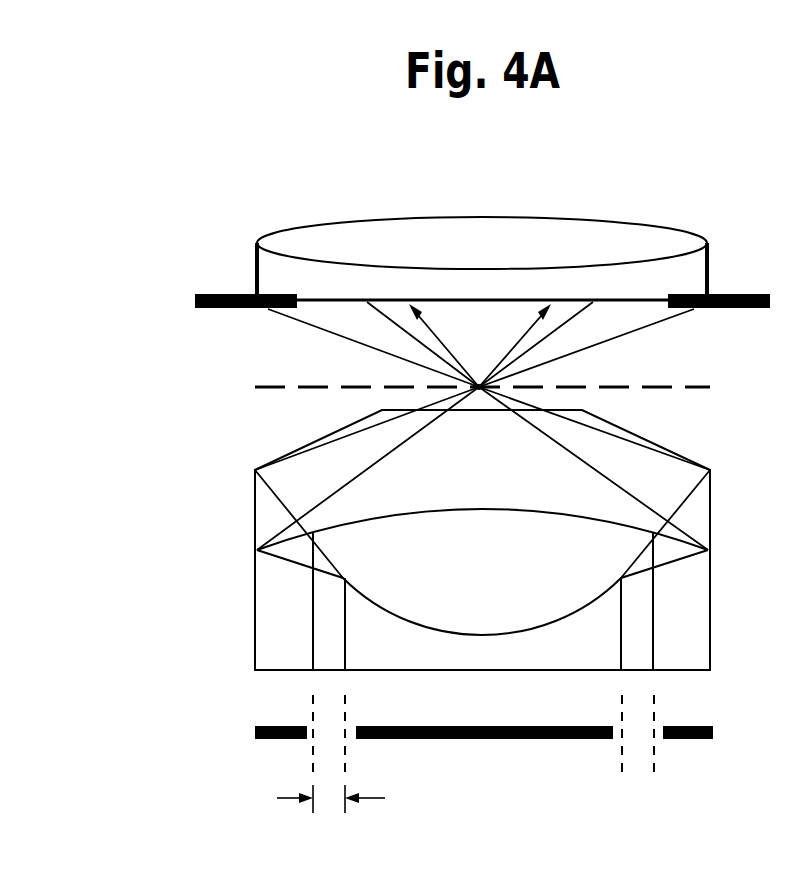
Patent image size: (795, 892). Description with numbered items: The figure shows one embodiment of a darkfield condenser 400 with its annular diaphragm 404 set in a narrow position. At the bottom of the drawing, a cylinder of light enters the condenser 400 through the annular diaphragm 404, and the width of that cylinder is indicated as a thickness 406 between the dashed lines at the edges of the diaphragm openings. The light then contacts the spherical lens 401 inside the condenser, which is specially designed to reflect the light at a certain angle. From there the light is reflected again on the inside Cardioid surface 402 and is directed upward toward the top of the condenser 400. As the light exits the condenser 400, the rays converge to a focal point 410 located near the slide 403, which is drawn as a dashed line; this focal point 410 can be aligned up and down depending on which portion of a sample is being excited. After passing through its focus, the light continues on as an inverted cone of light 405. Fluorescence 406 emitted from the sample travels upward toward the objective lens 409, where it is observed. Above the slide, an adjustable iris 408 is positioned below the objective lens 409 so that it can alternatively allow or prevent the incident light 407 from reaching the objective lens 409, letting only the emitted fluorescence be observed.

The darkfield condenser 400 is at (248, 166).
The spherical lens 401 is at (360, 598).
The Cardioid surface 402 is at (252, 505).
The slide 403 is at (262, 387).
The annular diaphragm 404 is at (255, 733).
The inverted cone of light 405 is at (652, 327).
The thickness of the light cylinder / fluorescence light 406 is at (541, 366).
The incident light 407 is at (310, 324).
The iris 408 is at (723, 295).
The objective lens 409 is at (645, 223).
The focal point 410 is at (479, 387).